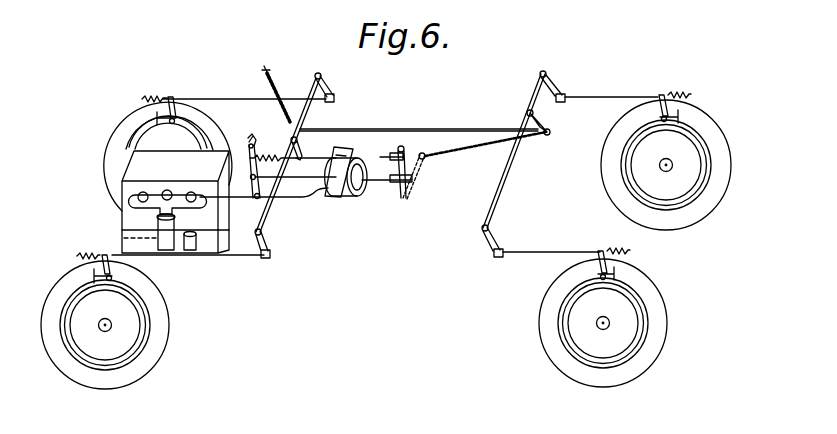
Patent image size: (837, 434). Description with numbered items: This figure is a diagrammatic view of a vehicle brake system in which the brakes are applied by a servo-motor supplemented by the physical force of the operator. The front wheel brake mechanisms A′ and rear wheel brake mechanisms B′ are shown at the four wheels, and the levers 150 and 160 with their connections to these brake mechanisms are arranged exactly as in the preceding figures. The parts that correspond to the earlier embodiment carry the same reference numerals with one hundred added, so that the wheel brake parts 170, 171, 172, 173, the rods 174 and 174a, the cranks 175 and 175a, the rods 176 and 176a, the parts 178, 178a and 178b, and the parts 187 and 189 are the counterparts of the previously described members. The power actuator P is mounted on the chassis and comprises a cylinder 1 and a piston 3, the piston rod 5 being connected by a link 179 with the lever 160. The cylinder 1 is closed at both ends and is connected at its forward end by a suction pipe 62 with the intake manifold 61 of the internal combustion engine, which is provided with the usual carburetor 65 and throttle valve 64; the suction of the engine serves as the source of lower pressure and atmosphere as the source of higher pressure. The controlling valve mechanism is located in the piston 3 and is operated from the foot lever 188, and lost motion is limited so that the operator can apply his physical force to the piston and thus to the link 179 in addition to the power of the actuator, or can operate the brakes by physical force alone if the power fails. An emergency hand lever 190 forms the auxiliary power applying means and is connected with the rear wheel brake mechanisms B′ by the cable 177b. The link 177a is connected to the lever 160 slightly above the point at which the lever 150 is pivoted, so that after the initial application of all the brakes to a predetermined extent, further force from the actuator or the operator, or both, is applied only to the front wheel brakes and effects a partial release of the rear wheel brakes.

The cylinder 1 is at (330, 190).
The piston 3 is at (347, 216).
The piston rod 5 is at (364, 178).
The intake manifold 61 is at (133, 200).
The suction pipe 62 is at (299, 201).
The throttle valve 64 is at (122, 234).
The carburetor 65 is at (192, 250).
The lever 150 is at (397, 190).
The lever 160 is at (422, 153).
The wheel rim 170 is at (147, 127).
The tire 171 is at (130, 142).
The brake bracket 172 is at (171, 97).
The spring 173 is at (382, 166).
The brake rod 174 is at (292, 97).
The brake rod 174a is at (628, 95).
The bell crank 175 is at (327, 78).
The bell crank 175a is at (554, 78).
The connecting rod 176 is at (304, 119).
The connecting rod 176a is at (533, 96).
The link 177a is at (459, 150).
The cable 177b is at (419, 121).
The link 178 is at (299, 143).
The pivot 178a is at (537, 112).
The crank arm 178b is at (552, 131).
The link 179 is at (382, 183).
The lever 187 is at (286, 182).
The foot lever 188 is at (255, 137).
The spring 189 is at (279, 158).
The emergency hand lever 190 is at (268, 94).
The front wheel brake mechanisms A′ is at (183, 142).
The rear wheel brake mechanisms B′ is at (690, 150).